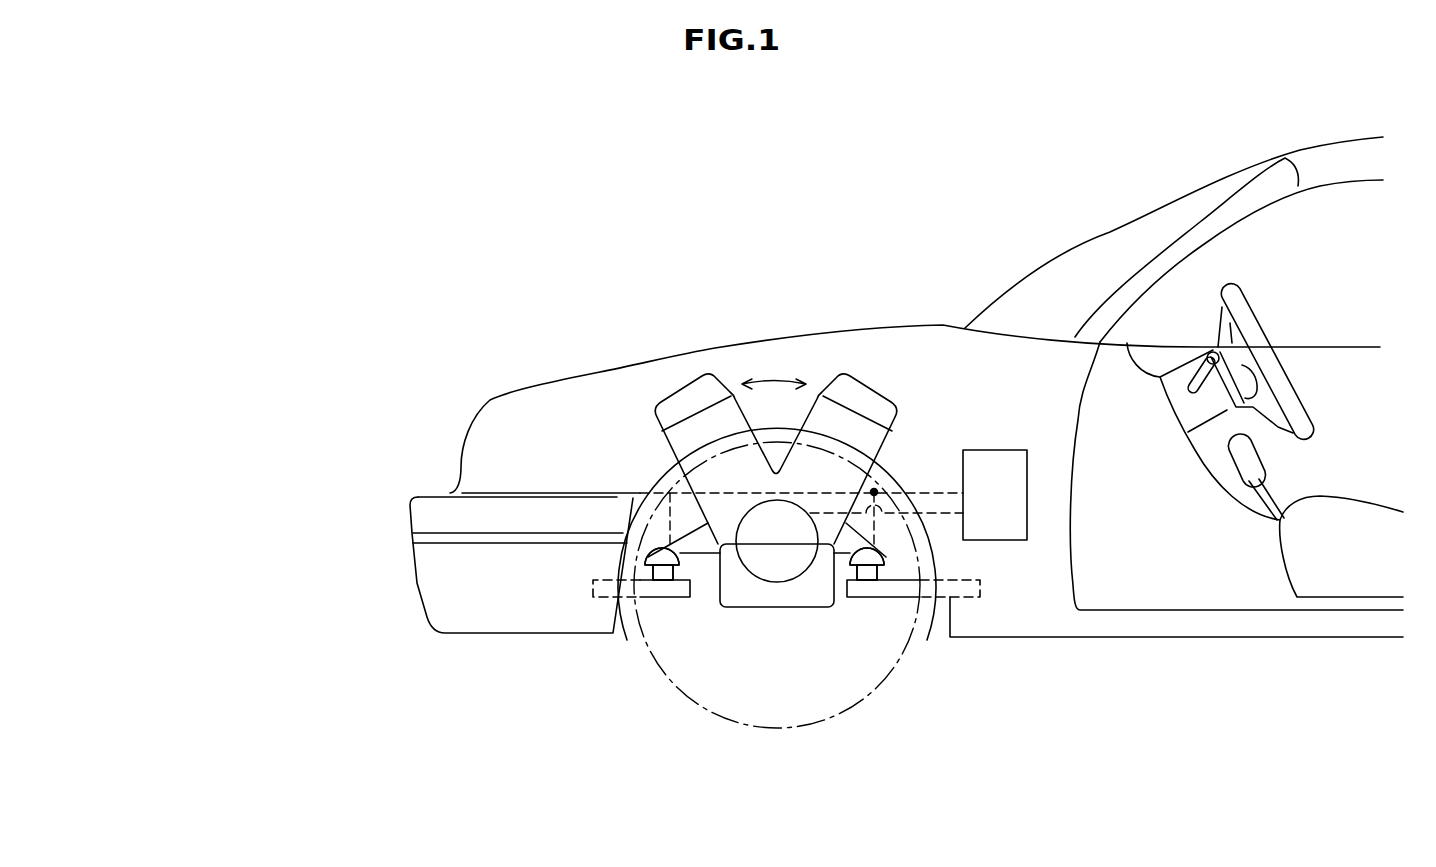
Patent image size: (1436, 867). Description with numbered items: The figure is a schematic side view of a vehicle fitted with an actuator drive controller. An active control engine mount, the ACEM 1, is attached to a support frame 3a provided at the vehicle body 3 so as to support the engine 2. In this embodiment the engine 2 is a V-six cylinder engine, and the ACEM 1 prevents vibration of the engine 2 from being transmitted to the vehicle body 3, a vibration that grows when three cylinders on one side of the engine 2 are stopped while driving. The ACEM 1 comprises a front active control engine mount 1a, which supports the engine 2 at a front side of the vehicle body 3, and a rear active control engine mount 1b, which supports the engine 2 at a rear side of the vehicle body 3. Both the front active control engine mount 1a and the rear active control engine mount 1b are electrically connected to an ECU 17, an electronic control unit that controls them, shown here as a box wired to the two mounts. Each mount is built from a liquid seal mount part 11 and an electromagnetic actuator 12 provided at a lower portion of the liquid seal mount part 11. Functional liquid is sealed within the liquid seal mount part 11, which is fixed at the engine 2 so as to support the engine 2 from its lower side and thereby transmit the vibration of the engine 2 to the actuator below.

The ACEM 1 is at (563, 680).
The front active control engine mount 1a is at (702, 563).
The rear active control engine mount 1b is at (851, 562).
The engine 2 is at (893, 395).
The vehicle body 3 is at (1290, 638).
The support frame 3a is at (660, 598).
The liquid seal mount part 11 is at (649, 556).
The electromagnetic actuator 12 is at (667, 575).
The ECU 17 is at (1020, 450).